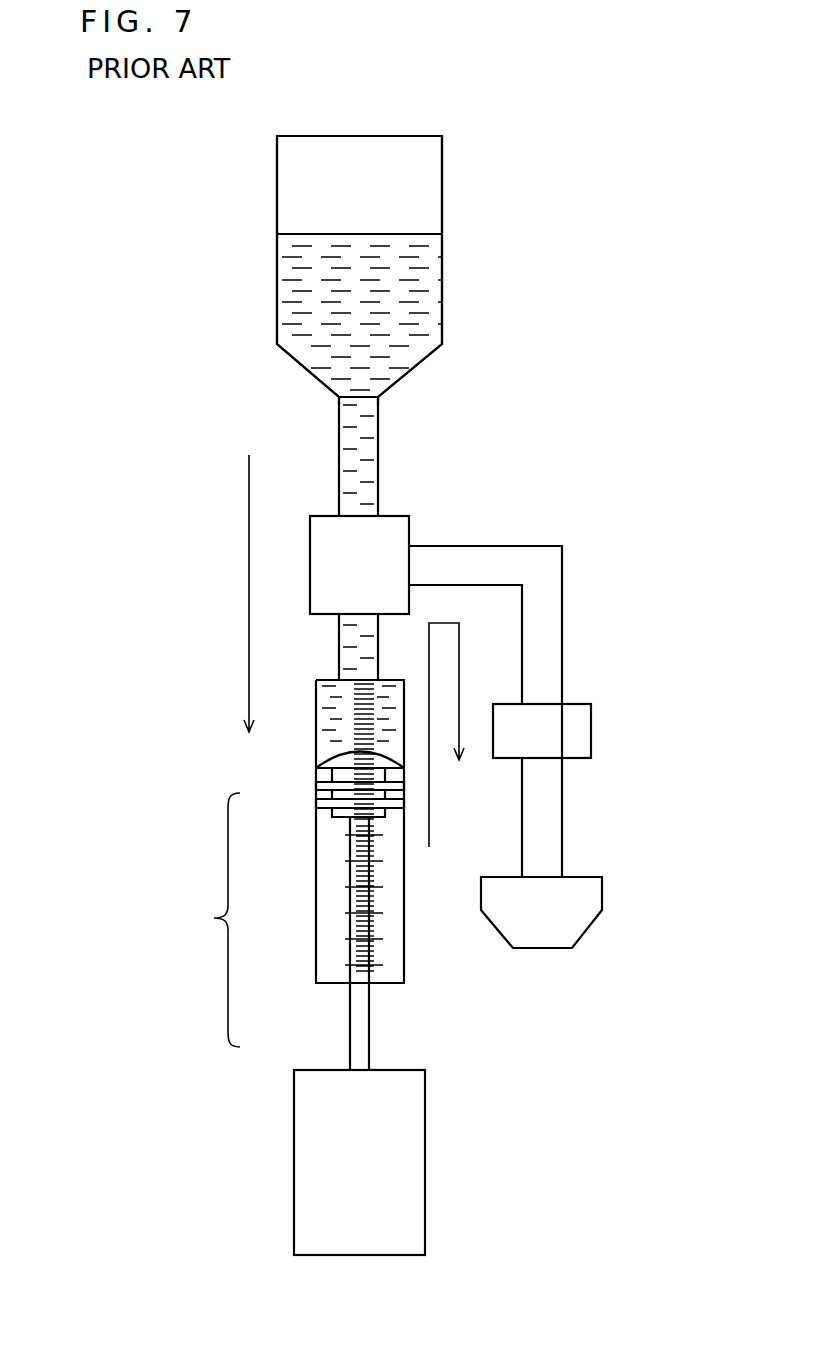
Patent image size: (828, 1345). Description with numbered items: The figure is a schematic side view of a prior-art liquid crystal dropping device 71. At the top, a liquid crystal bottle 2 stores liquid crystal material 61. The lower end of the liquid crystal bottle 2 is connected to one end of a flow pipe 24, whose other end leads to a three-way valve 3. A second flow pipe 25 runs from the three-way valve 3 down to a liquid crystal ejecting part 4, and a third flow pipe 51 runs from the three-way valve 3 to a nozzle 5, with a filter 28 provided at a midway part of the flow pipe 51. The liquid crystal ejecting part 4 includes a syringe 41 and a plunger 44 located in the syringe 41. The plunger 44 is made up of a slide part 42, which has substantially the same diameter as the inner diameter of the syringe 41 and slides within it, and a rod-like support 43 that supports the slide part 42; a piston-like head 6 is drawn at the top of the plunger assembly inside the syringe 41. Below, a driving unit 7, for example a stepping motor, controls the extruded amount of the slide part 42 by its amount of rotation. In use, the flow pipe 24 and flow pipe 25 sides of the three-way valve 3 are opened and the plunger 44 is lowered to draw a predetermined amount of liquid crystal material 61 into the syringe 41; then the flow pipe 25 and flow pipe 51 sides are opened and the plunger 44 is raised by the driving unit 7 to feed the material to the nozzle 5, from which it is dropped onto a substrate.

The liquid crystal dropping device 71 is at (466, 200).
The liquid crystal bottle 2 is at (442, 328).
The liquid crystal material 61 is at (432, 270).
The flow pipe 24 is at (380, 432).
The three-way valve 3 is at (395, 518).
The flow pipe 25 is at (339, 653).
The flow pipe 51 is at (555, 637).
The filter 28 is at (575, 735).
The nozzle 5 is at (590, 897).
The syringe 41 is at (322, 706).
The piston 6 is at (320, 746).
The slide part 42 is at (316, 803).
The liquid crystal ejecting part 4 is at (389, 957).
The support 43 is at (355, 1024).
The plunger 44 is at (201, 920).
The driving unit 7 is at (415, 1152).